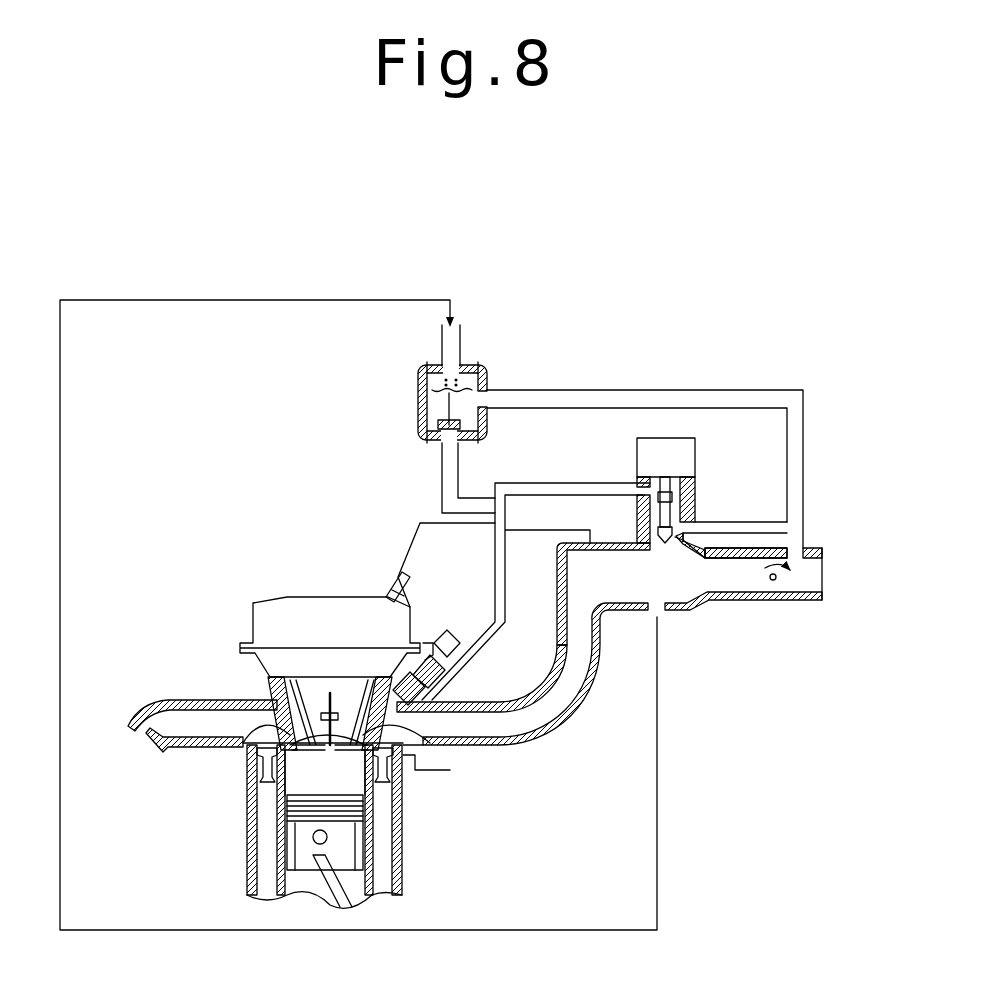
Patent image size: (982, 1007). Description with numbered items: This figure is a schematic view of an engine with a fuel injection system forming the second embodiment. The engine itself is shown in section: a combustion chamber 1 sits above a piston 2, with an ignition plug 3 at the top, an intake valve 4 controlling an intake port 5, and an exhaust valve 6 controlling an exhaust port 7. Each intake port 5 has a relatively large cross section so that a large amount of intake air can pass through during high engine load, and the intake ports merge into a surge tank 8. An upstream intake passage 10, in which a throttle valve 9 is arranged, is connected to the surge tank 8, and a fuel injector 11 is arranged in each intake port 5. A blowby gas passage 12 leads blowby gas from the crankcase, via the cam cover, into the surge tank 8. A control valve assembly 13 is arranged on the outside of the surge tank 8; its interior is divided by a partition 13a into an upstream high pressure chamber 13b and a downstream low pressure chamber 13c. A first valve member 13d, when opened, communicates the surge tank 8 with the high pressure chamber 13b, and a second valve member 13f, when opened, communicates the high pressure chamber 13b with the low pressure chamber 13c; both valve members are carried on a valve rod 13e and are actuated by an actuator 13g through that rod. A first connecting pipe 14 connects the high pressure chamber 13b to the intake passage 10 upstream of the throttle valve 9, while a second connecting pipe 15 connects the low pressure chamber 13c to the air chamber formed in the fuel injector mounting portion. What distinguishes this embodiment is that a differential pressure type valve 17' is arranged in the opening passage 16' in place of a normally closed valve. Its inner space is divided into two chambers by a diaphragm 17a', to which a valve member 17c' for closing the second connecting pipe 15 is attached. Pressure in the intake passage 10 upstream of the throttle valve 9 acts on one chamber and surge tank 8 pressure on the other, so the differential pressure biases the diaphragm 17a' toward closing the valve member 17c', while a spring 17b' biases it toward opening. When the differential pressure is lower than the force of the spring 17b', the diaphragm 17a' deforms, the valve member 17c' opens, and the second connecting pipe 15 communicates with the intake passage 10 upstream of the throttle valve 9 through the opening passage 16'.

The combustion chamber 1 is at (347, 782).
The piston 2 is at (350, 845).
The ignition plug 3 is at (253, 793).
The intake valve 4 is at (430, 742).
The intake port 5 is at (530, 720).
The exhaust valve 6 is at (243, 748).
The exhaust port 7 is at (191, 703).
The surge tank 8 is at (624, 590).
The throttle valve 9 is at (775, 581).
The upstream intake passage 10 is at (822, 574).
The fuel injector 11 is at (427, 647).
The blowby gas passage 12 is at (412, 553).
The control valve assembly 13 is at (708, 492).
The partition 13a is at (697, 474).
The high pressure chamber 13b is at (633, 521).
The low pressure chamber 13c is at (652, 486).
The first valve member 13d is at (664, 546).
The valve rod 13e is at (693, 524).
The second valve member 13f is at (677, 475).
The actuator 13g is at (647, 448).
The first connecting pipe 14 is at (745, 527).
The second connecting pipe 15 is at (517, 481).
The opening passage 16' is at (417, 478).
The differential pressure type valve 17' is at (404, 402).
The diaphragm 17a' is at (635, 447).
The spring 17b' is at (485, 329).
The valve member 17c' is at (380, 420).